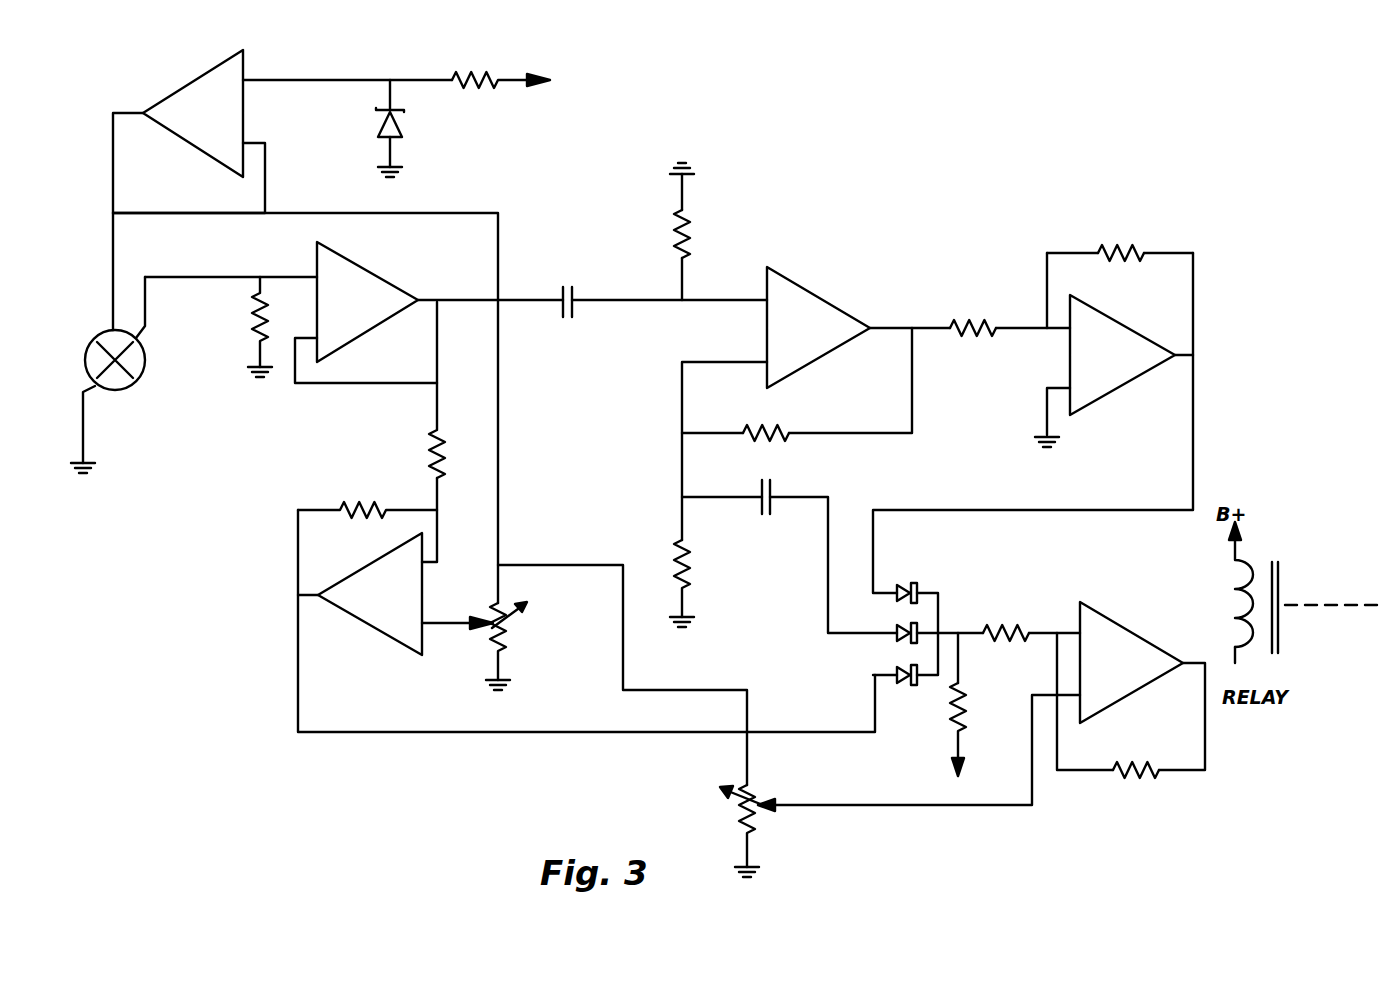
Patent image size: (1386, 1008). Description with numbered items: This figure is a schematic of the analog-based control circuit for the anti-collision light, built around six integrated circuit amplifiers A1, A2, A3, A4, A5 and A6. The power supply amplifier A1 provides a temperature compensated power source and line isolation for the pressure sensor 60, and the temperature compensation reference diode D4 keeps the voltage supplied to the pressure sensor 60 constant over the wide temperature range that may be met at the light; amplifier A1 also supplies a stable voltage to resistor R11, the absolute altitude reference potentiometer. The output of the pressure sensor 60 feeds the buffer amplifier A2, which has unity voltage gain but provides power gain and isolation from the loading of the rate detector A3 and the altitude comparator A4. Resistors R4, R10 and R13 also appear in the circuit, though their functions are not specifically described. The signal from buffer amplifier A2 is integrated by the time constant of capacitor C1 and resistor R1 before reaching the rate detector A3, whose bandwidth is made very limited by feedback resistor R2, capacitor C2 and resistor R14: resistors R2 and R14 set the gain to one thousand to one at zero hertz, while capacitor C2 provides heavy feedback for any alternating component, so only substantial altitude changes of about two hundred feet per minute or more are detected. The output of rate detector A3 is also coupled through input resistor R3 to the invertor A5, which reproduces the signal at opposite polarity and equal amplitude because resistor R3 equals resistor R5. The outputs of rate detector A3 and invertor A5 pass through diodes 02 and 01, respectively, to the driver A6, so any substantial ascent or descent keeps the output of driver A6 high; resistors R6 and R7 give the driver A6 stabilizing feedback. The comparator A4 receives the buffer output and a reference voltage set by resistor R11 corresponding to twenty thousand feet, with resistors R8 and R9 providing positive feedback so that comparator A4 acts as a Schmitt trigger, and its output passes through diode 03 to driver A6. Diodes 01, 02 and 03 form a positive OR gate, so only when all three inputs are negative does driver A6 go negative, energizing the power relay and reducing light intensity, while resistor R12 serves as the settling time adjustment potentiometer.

The power supply amplifier A1 is at (193, 113).
The buffer amplifier A2 is at (367, 302).
The rate detector A3 is at (818, 327).
The altitude comparator A4 is at (370, 594).
The invertor A5 is at (1122, 355).
The driver circuit A6 is at (1131, 662).
The resistor R1 is at (699, 230).
The feedback resistor R2 is at (754, 423).
The input resistor R3 is at (973, 316).
The resistor R4 is at (1121, 243).
The resistor R5 is at (970, 744).
The resistor R6 is at (1006, 621).
The resistor R7 is at (1136, 761).
The resistor R8 is at (415, 430).
The resistor R9 is at (367, 500).
The resistor R10 is at (519, 70).
The absolute altitude reference potentiometer R11 is at (510, 629).
The settling time adjustment potentiometer R12 is at (762, 821).
The resistor R13 is at (233, 322).
The resistor R14 is at (707, 578).
The capacitor C1 is at (583, 293).
The capacitor C2 is at (746, 492).
The temperature compensation reference diode D4 is at (409, 123).
The diode 01 is at (918, 590).
The diode 02 is at (918, 630).
The diode 03 is at (918, 672).
The pressure sensor 60 is at (146, 364).